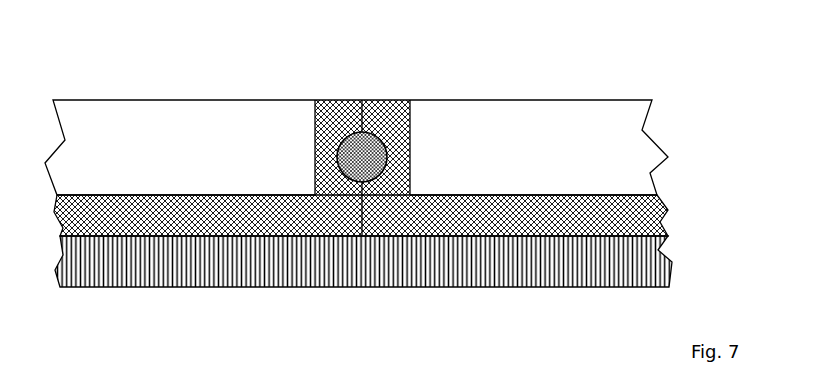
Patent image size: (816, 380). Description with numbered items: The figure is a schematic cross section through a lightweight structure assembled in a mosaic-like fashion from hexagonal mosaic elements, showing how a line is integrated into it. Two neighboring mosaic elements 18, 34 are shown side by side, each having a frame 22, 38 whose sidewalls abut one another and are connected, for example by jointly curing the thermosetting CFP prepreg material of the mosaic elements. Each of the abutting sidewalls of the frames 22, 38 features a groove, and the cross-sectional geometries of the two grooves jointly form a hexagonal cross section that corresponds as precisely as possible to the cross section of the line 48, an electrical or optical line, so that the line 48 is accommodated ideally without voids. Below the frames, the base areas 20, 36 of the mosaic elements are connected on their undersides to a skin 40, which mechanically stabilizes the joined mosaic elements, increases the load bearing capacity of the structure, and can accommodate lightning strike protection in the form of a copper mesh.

The mosaic element 18 is at (110, 127).
The frame 22 is at (313, 125).
The line 48 is at (365, 130).
The frame 38 is at (413, 125).
The mosaic element 34 is at (611, 127).
The base area 20 is at (205, 228).
The base area 36 is at (539, 228).
The skin 40 is at (327, 268).